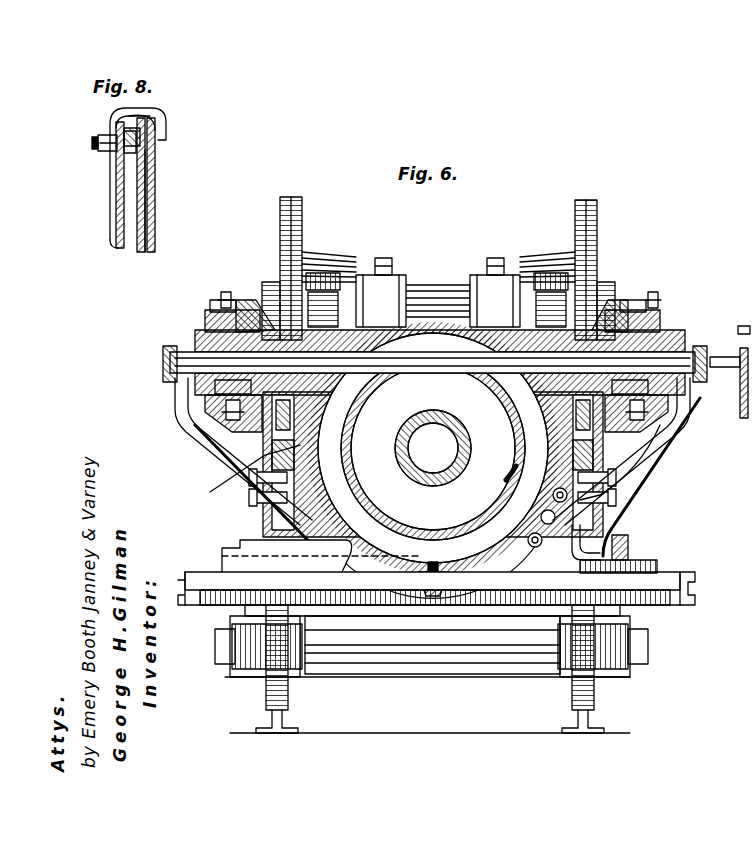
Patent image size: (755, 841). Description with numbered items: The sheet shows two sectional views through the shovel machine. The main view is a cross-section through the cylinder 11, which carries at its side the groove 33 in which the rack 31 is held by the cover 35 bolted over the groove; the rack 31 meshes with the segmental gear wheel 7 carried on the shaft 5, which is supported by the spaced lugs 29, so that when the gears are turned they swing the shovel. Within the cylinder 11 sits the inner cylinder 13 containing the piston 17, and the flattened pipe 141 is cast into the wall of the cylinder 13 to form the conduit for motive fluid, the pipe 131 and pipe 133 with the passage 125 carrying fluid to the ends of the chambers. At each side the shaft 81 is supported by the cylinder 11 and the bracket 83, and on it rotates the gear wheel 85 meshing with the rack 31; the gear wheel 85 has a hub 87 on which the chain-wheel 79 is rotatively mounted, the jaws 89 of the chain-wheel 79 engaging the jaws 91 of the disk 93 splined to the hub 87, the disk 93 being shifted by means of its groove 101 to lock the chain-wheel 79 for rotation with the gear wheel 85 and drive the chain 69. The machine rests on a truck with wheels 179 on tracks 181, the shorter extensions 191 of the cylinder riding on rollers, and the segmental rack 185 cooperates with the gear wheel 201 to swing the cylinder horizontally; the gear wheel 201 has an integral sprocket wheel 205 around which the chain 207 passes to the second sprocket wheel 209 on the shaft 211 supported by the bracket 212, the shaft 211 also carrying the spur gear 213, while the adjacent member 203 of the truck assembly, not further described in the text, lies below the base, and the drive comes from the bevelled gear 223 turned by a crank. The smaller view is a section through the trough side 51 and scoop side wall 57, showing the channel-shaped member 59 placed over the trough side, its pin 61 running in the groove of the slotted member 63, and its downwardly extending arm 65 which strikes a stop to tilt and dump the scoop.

In FIG. 6, the shaft 5 is at (428, 290).
In FIG. 6, the segmental gear wheels 7 is at (302, 232).
In FIG. 6, the cylinder 11 is at (408, 368).
In FIG. 6, the cylinder 13 is at (436, 360).
In FIG. 6, the piston 17 is at (400, 455).
In FIG. 6, the spaced lugs 29 is at (385, 278).
In FIG. 6, the racks 31 is at (266, 440).
In FIG. 6, the groove 33 is at (345, 440).
In FIG. 6, the covers 35 is at (438, 464).
In FIG. 8, the sides 51 is at (140, 250).
In FIG. 8, the side walls 57 is at (155, 215).
In FIG. 8, the channel-shaped member 59 is at (160, 124).
In FIG. 8, the pin 61 is at (110, 151).
In FIG. 8, the slotted member 63 is at (130, 128).
In FIG. 8, the downwardly extending arm 65 is at (117, 214).
In FIG. 6, the chains 69 is at (226, 294).
In FIG. 6, the chain-wheel 79 is at (262, 312).
In FIG. 6, the shafts 81 is at (392, 394).
In FIG. 6, the brackets 83 is at (215, 470).
In FIG. 6, the gear wheels 85 is at (392, 330).
In FIG. 6, the hubs 87 is at (212, 332).
In FIG. 6, the jaws 89 is at (658, 312).
In FIG. 6, the jaws 91 is at (212, 330).
In FIG. 6, the disks 93 is at (176, 392).
In FIG. 6, the grooves 101 is at (192, 428).
In FIG. 6, the passage 125 is at (540, 517).
In FIG. 6, the pipe 131 is at (552, 495).
In FIG. 6, the pipe 133 is at (527, 540).
In FIG. 6, the flattened pipe 141 is at (512, 470).
In FIG. 6, the wheels 179 is at (266, 693).
In FIG. 6, the tracks 181 is at (290, 715).
In FIG. 6, the segmental rack 185 is at (215, 607).
In FIG. 6, the shorter extensions 191 is at (270, 565).
In FIG. 6, the gear wheel 201 is at (410, 616).
In FIG. 6, the roller 203 is at (431, 646).
In FIG. 6, the sprocket wheel 205 is at (432, 588).
In FIG. 6, the chain 207 is at (498, 588).
In FIG. 6, the second sprocket wheel 209 is at (672, 578).
In FIG. 6, the shaft 211 is at (620, 538).
In FIG. 6, the bracket 212 is at (630, 548).
In FIG. 6, the spur gear 213 is at (650, 562).
In FIG. 6, the bevelled gear 223 is at (735, 348).